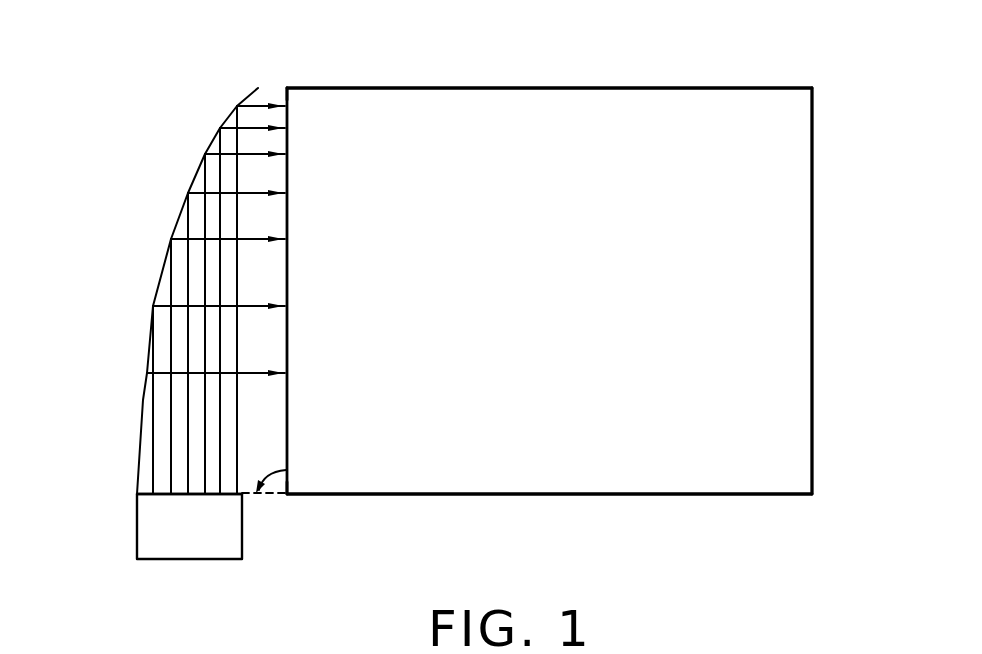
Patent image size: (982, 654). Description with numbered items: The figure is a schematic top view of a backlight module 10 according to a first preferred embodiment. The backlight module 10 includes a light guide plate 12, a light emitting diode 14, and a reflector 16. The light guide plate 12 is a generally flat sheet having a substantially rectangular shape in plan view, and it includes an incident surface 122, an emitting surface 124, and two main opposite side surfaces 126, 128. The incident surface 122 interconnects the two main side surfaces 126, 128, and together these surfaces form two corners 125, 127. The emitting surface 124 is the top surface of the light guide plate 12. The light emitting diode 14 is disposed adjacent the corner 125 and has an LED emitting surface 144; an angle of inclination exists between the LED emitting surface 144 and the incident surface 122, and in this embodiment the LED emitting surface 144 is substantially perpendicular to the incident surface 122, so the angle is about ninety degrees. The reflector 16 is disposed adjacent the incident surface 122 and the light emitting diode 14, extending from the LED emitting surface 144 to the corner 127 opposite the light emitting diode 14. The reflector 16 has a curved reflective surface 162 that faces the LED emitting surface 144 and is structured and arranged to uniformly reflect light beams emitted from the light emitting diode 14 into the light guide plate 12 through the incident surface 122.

The backlight module 10 is at (460, 29).
The light guide plate 12 is at (628, 76).
The emitting surface 124 is at (760, 270).
The corner 125 is at (287, 494).
The main side surface 126 is at (596, 496).
The corner 127 is at (287, 88).
The main side surface 128 is at (741, 88).
The light emitting diode 14 is at (192, 528).
The LED emitting surface 144 is at (180, 494).
The reflector 16 is at (162, 210).
The curved reflective surface 162 is at (256, 91).
The incident surface 122 is at (147, 374).